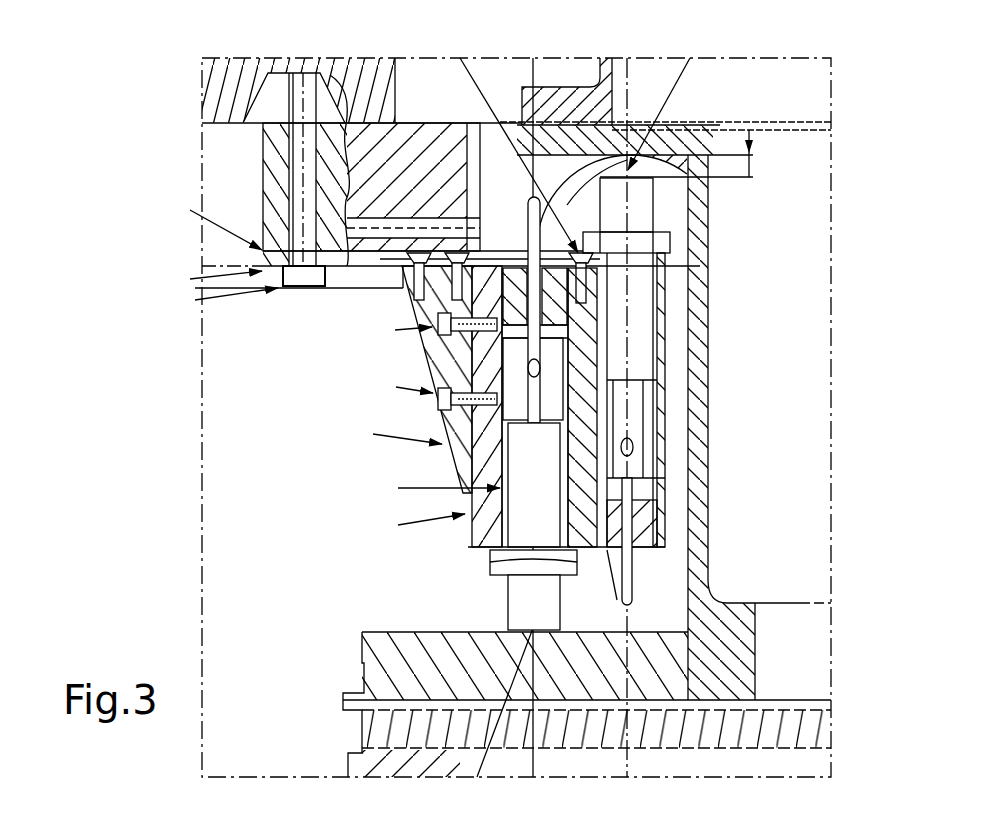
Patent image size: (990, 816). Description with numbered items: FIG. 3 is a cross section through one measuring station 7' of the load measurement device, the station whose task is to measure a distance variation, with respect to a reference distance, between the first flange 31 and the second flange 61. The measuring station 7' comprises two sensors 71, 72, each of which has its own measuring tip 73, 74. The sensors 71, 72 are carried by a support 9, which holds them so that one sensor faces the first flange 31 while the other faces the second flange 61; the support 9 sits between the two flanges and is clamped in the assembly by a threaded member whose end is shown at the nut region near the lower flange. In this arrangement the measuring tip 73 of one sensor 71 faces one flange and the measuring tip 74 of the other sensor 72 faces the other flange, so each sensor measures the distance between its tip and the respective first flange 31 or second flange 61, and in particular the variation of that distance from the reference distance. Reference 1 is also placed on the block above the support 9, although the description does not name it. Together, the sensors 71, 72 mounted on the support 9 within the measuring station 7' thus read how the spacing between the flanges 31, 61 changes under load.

The block 1 is at (371, 170).
The first flange 31 is at (687, 153).
The measuring tip 73 is at (630, 172).
The sensor 71 is at (632, 282).
The sensor 72 is at (540, 518).
The measuring tip 74 is at (535, 620).
The second flange 61 is at (463, 650).
The support 9 is at (413, 357).
The measuring station 7' is at (359, 403).